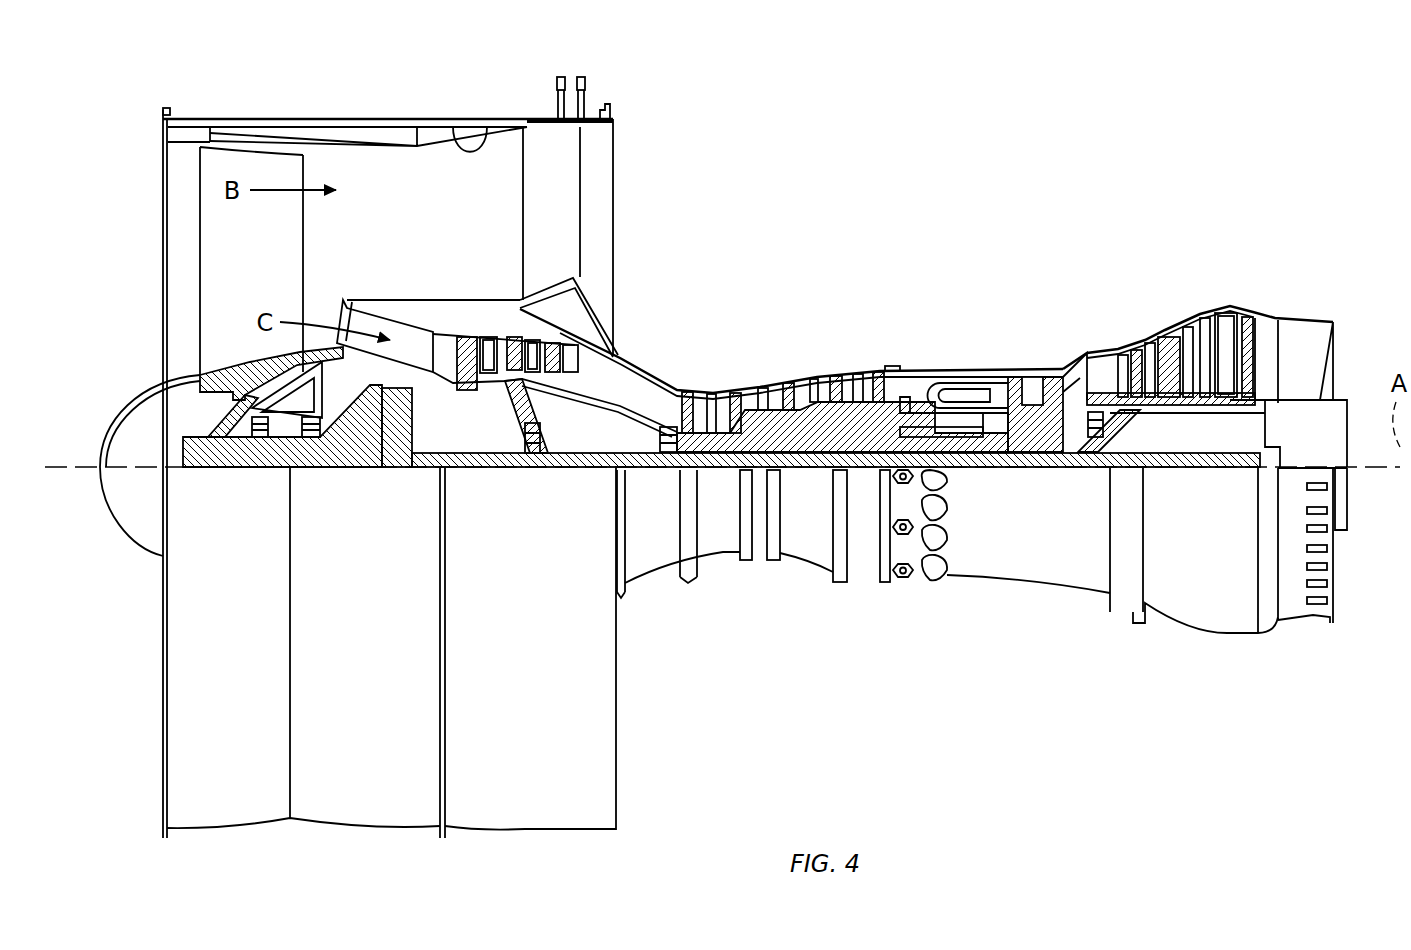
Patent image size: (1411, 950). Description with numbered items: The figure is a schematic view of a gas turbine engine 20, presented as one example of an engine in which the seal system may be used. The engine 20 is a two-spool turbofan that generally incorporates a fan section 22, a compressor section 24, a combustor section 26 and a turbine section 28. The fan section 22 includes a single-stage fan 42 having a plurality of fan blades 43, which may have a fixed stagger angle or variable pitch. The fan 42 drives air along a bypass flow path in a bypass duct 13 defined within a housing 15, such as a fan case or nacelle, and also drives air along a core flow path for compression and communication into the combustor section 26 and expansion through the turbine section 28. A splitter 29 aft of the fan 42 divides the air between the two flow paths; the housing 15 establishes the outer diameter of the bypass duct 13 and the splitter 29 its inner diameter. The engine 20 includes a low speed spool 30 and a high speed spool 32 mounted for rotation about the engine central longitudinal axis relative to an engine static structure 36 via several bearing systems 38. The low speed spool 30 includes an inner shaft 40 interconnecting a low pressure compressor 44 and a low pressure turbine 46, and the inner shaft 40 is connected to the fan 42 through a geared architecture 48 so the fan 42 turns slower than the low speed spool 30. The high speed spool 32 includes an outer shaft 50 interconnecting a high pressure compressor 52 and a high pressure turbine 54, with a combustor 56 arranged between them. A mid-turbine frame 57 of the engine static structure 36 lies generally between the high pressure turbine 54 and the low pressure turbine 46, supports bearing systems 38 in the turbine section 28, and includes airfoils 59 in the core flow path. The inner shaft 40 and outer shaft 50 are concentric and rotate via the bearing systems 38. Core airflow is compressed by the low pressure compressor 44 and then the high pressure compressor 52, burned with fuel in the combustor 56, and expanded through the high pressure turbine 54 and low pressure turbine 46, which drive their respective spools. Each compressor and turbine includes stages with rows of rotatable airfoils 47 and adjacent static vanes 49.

The bypass duct 13 is at (480, 148).
The housing 15 is at (393, 125).
The gas turbine engine 20 is at (1014, 210).
The fan section 22 is at (308, 112).
The compressor section 24 is at (666, 366).
The combustor section 26 is at (942, 354).
The turbine section 28 is at (1138, 300).
The splitter 29 is at (380, 296).
The low speed spool 30 is at (818, 480).
The high speed spool 32 is at (863, 432).
The engine static structure 36 is at (860, 582).
The bearing systems 38 is at (560, 470).
The inner shaft 40 is at (638, 472).
The fan 42 is at (254, 257).
The fan blades 43 is at (290, 272).
The low pressure compressor 44 is at (515, 348).
The low pressure turbine 46 is at (1190, 335).
The rotatable airfoils 47 is at (468, 352).
The geared architecture 48 is at (396, 470).
The static vanes 49 is at (487, 345).
The outer shaft 50 is at (985, 470).
The high pressure compressor 52 is at (787, 388).
The high pressure turbine 54 is at (1035, 378).
The combustor 56 is at (958, 393).
The mid-turbine frame 57 is at (1088, 352).
The airfoils 59 is at (1122, 420).